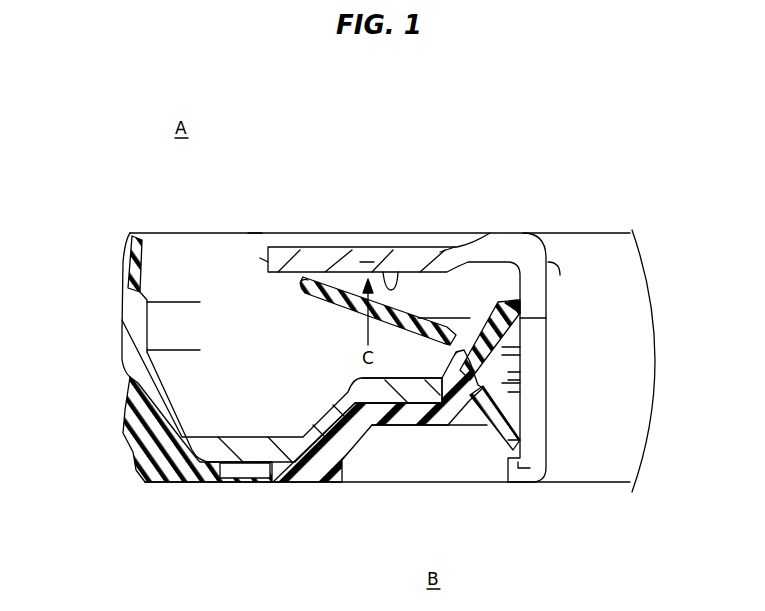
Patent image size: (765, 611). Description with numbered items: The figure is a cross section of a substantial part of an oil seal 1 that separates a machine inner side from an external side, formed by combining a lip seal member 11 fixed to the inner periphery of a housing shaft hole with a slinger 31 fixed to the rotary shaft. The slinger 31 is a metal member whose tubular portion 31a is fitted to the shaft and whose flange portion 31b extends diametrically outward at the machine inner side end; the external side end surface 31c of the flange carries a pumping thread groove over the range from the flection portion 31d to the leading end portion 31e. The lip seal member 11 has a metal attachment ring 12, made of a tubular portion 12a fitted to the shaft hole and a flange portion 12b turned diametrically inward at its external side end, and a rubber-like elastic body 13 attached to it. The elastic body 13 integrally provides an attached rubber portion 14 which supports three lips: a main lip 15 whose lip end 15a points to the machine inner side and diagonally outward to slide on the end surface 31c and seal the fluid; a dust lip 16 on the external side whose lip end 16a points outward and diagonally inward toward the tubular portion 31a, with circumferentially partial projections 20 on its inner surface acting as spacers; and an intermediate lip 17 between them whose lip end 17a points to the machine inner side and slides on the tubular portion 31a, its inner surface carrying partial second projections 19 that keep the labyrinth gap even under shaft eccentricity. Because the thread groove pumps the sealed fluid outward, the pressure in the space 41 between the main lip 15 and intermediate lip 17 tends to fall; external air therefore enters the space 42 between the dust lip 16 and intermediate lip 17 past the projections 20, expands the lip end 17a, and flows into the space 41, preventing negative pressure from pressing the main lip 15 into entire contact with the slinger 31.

The oil seal 1 is at (128, 233).
The lip seal member 11 is at (140, 486).
The attachment ring 12 is at (203, 452).
The tubular portion 12a is at (128, 322).
The flange portion 12b is at (400, 389).
The rubber-like elastic body 13 is at (300, 478).
The attached rubber portion 14 is at (458, 426).
The main lip 15 is at (418, 300).
The lip end 15a is at (306, 272).
The dust lip 16 is at (546, 402).
The lip end 16a is at (546, 463).
The intermediate lip 17 is at (512, 352).
The lip end 17a is at (522, 306).
The second projection 19 is at (530, 330).
The projection 20 is at (530, 445).
The slinger 31 is at (526, 240).
The tubular portion 31a is at (520, 365).
The flange portion 31b is at (367, 262).
The end surface 31c is at (394, 272).
The flection portion 31d is at (443, 250).
The leading end portion 31e is at (255, 233).
The space 41 is at (547, 268).
The space 42 is at (522, 390).